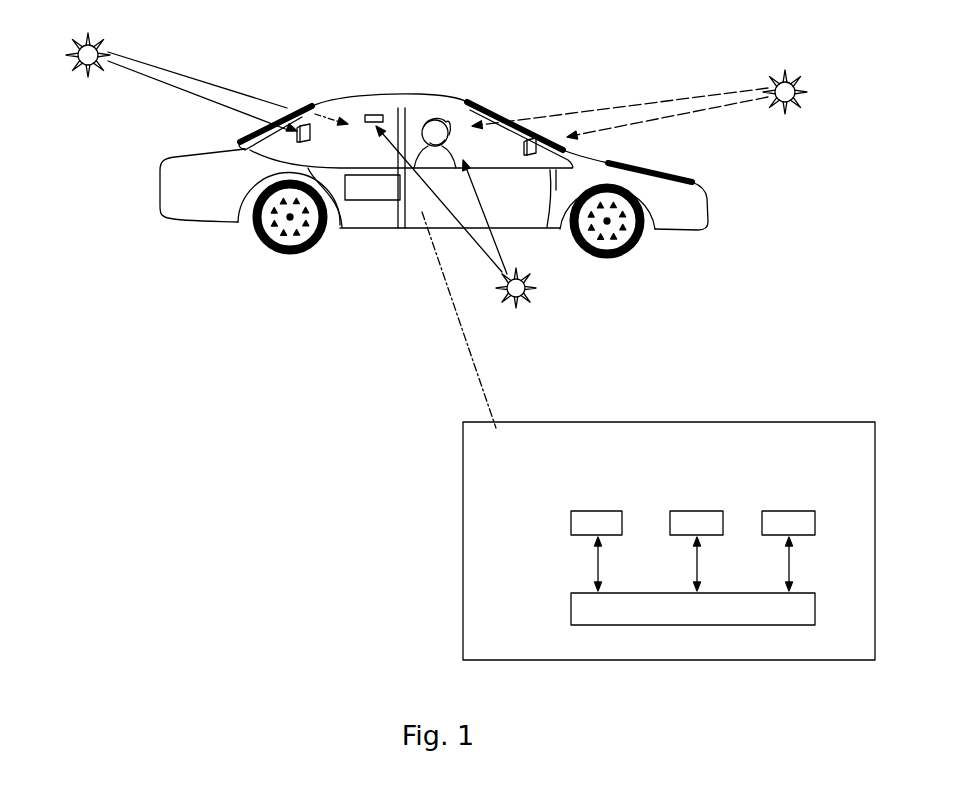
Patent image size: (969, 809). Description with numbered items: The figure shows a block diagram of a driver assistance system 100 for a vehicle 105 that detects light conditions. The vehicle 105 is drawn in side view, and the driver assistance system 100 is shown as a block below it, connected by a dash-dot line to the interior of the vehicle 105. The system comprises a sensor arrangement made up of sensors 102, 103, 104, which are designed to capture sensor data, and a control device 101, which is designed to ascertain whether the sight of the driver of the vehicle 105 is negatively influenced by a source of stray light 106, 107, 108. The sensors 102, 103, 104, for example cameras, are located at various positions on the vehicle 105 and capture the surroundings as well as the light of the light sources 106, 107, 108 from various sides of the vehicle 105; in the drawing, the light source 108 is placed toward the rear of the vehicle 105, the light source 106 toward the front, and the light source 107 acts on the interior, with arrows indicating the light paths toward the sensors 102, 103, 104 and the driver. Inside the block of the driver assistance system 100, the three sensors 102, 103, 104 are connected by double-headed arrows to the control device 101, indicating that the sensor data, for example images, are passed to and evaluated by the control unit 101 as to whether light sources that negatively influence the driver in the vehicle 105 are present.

The driver assistance system 100 is at (827, 422).
The control device 101 is at (383, 200).
The sensor 102 is at (237, 154).
The sensor 103 is at (372, 113).
The sensor 104 is at (535, 140).
The vehicle 105 is at (710, 218).
The source of stray light 106 is at (815, 82).
The source of stray light 107 is at (547, 312).
The source of stray light 108 is at (90, 88).